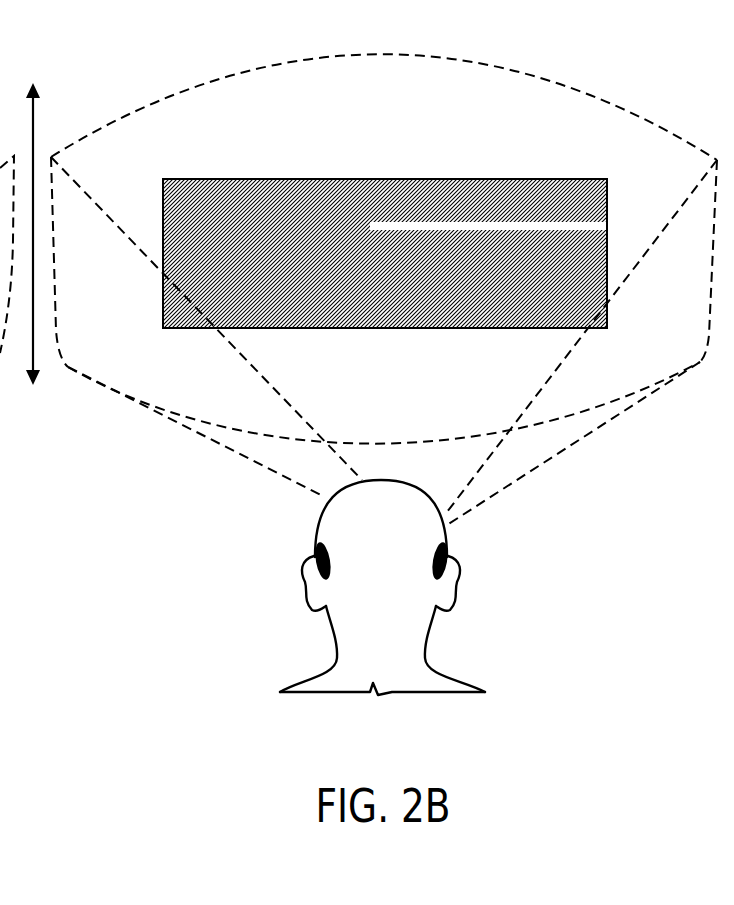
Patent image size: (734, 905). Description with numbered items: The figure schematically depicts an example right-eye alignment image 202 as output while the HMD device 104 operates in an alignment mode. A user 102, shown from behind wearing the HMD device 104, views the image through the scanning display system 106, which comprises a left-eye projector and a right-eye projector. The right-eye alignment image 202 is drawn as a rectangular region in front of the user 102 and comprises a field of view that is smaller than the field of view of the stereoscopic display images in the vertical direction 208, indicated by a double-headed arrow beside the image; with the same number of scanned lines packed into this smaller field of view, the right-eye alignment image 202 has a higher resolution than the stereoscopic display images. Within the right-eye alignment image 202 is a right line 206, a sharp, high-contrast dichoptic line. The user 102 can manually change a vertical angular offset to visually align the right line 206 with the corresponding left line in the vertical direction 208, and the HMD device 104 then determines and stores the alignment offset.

The user 102 is at (366, 536).
The HMD device 104 is at (333, 556).
The scanning display system 106 is at (293, 540).
The right-eye alignment image 202 is at (162, 213).
The right line 206 is at (597, 226).
The vertical direction 208 is at (36, 107).